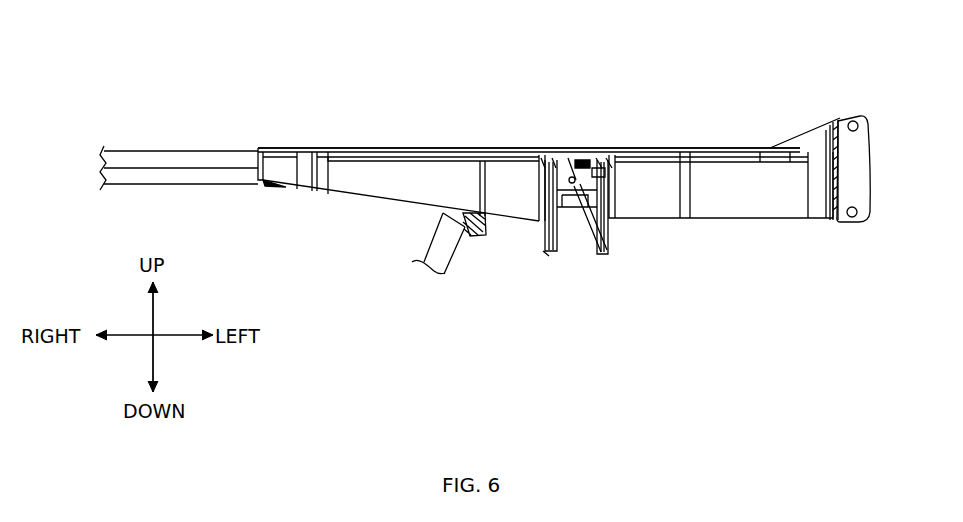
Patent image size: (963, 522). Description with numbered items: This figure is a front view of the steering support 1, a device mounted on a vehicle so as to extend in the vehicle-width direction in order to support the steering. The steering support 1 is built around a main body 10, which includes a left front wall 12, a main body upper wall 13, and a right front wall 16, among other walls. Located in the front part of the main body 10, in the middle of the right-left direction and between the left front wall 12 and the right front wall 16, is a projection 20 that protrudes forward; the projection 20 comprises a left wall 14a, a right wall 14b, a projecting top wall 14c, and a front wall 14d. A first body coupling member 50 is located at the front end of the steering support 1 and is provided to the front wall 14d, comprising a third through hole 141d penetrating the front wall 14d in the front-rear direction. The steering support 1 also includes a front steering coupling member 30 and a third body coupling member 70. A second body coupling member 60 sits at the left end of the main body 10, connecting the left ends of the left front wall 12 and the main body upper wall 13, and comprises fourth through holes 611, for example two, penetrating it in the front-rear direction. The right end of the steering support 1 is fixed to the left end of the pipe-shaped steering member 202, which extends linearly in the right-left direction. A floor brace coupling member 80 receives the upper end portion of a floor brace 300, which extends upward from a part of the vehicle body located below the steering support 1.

The steering support 1 is at (582, 40).
The main body 10 is at (693, 120).
The left front wall 12 is at (758, 205).
The main body upper wall 13 is at (492, 148).
The left wall 14a is at (612, 172).
The right wall 14b is at (545, 166).
The projecting top wall 14c is at (600, 165).
The front wall 14d is at (554, 161).
The third through hole 141d is at (572, 176).
The right front wall 16 is at (374, 182).
The projection 20 is at (541, 252).
The front steering coupling member 30 is at (561, 254).
The first body coupling member 50 is at (578, 183).
The second body coupling member 60 is at (872, 168).
The fourth through hole 611 is at (853, 118).
The third body coupling member 70 is at (272, 197).
The floor brace coupling member 80 is at (482, 238).
The steering member 202 is at (172, 150).
The floor brace 300 is at (432, 258).